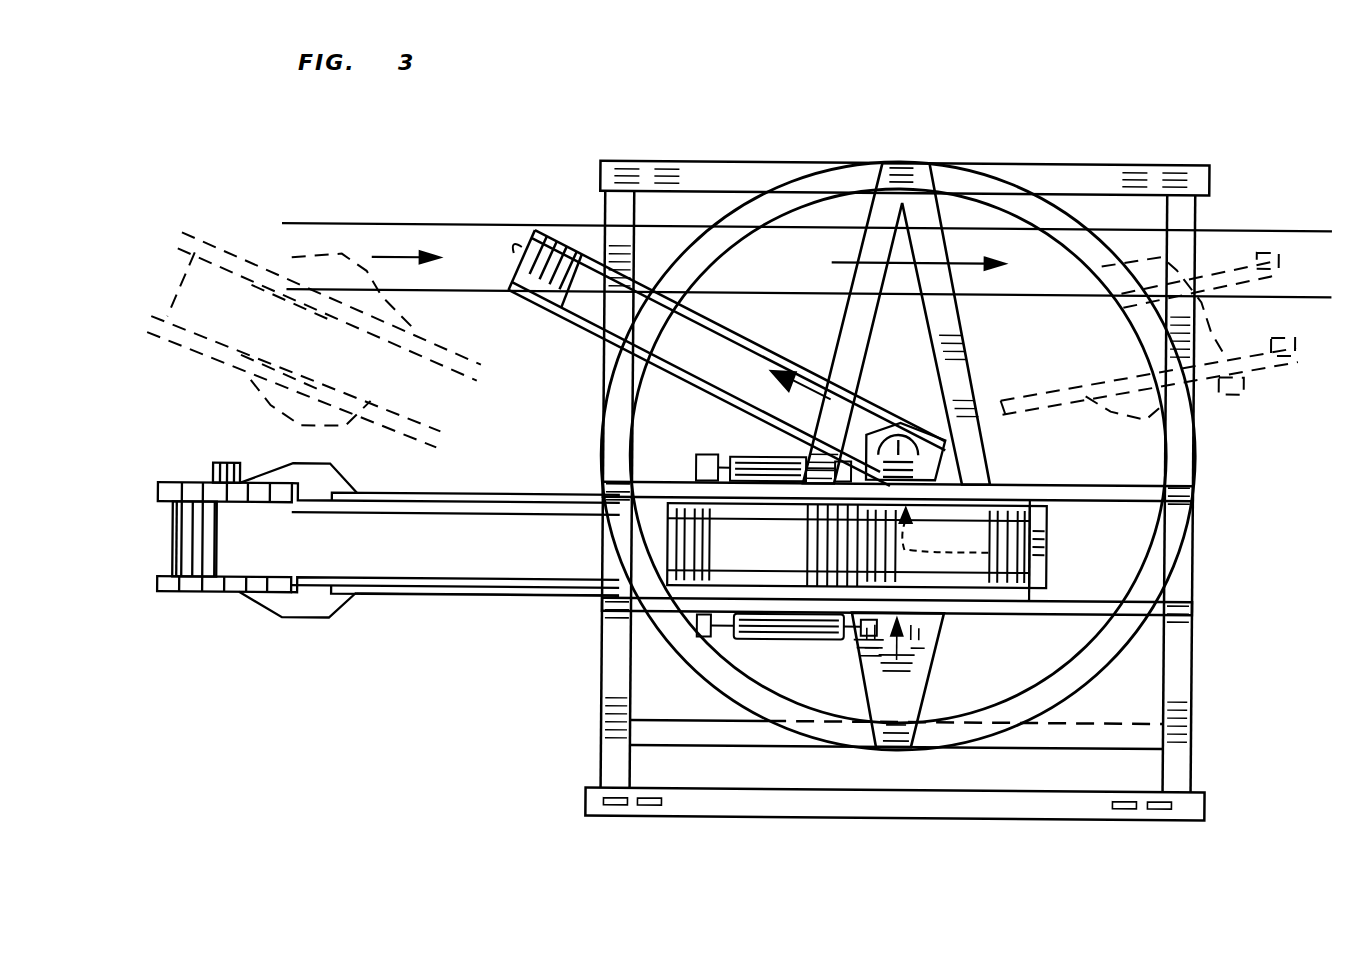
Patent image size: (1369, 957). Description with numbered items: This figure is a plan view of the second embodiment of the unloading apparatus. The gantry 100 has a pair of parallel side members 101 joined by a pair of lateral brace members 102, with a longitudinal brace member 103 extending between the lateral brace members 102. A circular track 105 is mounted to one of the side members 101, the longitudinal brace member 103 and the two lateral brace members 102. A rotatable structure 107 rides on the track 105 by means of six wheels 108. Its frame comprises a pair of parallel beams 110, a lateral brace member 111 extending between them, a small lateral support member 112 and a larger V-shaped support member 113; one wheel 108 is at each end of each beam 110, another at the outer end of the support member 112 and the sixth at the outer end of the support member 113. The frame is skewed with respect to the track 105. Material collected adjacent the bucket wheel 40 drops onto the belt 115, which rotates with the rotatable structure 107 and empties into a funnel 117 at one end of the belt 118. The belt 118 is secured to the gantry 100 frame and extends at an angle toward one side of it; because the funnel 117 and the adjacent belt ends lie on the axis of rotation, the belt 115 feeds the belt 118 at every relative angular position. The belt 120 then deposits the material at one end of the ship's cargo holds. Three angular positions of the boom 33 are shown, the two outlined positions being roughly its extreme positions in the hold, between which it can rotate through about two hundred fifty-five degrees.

The boom 33 is at (432, 612).
The bucket wheel 40 is at (180, 470).
The gantry 100 is at (1032, 158).
The side members 101 is at (1098, 170).
The lateral brace members 102 is at (605, 693).
The longitudinal brace member 103 is at (1105, 732).
The circular track 105 is at (1160, 572).
The rotatable structure 107 is at (1135, 470).
The wheels 108 is at (900, 158).
The beams 110 is at (1062, 493).
The lateral brace member 111 is at (1045, 522).
The small lateral support member 112 is at (860, 676).
The V-shaped support member 113 is at (838, 352).
The belt 115 is at (925, 632).
The funnel 117 is at (900, 430).
The belt 118 is at (770, 332).
The belt 120 is at (1295, 252).